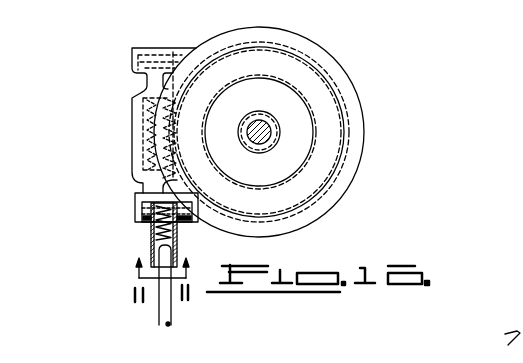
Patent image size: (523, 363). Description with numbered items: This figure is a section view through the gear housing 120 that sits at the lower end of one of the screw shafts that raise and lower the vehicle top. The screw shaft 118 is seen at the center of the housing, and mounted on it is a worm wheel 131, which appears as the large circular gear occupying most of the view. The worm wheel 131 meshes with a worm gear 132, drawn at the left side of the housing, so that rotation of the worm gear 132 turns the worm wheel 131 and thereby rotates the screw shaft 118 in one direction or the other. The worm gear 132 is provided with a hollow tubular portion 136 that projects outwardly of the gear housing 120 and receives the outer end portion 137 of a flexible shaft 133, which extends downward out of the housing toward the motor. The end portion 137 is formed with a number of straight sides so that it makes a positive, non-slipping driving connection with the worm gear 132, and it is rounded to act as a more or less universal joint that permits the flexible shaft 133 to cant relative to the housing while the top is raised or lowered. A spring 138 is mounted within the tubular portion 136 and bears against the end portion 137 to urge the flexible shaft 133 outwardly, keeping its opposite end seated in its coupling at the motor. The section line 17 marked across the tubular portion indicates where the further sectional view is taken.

The section line 17- 17 is at (125, 293).
The screw shaft 118 is at (265, 135).
The gear housing 120 is at (356, 90).
The worm wheel 131 is at (306, 63).
The worm gear 132 is at (128, 154).
The flexible shaft 133 is at (167, 323).
The hollow tubular portion 136 is at (151, 224).
The outer end portion 137 is at (178, 252).
The spring 138 is at (151, 242).